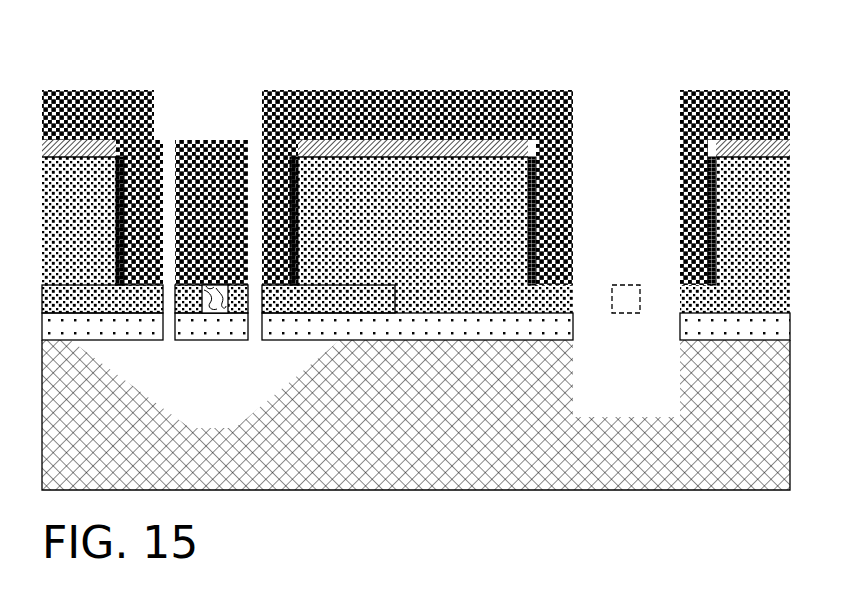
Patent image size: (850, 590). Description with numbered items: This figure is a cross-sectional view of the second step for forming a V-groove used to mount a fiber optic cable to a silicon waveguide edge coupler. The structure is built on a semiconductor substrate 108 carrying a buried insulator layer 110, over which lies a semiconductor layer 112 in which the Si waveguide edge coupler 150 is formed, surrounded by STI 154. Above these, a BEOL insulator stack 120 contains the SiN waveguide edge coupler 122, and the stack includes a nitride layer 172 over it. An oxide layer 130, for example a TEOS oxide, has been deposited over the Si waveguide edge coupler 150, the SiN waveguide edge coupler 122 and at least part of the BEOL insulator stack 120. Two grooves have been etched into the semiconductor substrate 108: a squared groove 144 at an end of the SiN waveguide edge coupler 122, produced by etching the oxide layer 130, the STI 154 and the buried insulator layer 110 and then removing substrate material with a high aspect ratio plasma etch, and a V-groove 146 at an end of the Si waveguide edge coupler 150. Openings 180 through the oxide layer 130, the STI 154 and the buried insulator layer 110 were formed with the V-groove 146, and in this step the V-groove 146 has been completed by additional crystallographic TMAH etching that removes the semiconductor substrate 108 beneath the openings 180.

The semiconductor substrate 108 is at (461, 468).
The buried insulator layer 110 is at (549, 328).
The semiconductor layer 112 is at (283, 165).
The BEOL insulator stack 120 is at (488, 237).
The SiN waveguide edge coupler 122 is at (627, 295).
The oxide layer 130 is at (118, 190).
The squared groove 144 is at (658, 410).
The V-groove 146 is at (220, 385).
The Si waveguide edge coupler 150 is at (218, 305).
The STI 154 is at (97, 298).
The nitride layer 172 is at (417, 148).
The openings 180 is at (253, 162).